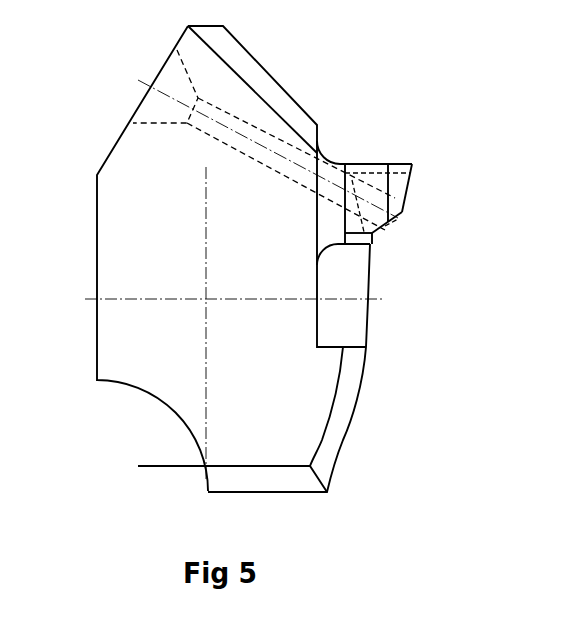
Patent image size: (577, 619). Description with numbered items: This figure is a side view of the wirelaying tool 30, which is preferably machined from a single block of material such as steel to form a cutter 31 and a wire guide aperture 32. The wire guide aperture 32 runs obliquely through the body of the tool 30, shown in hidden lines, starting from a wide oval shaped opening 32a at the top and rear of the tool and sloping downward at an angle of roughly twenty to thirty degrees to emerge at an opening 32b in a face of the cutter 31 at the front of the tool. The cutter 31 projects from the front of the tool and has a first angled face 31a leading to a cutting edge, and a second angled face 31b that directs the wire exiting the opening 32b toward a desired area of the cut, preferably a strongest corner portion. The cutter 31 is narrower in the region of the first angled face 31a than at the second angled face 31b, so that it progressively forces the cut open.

The wirelaying tool 30 is at (132, 412).
The cutter 31 is at (368, 165).
The first angled face 31a is at (410, 163).
The second angled face 31b is at (376, 241).
The wire guide aperture 32 is at (290, 177).
The wide oval shaped opening 32a is at (158, 107).
The opening 32b is at (395, 220).